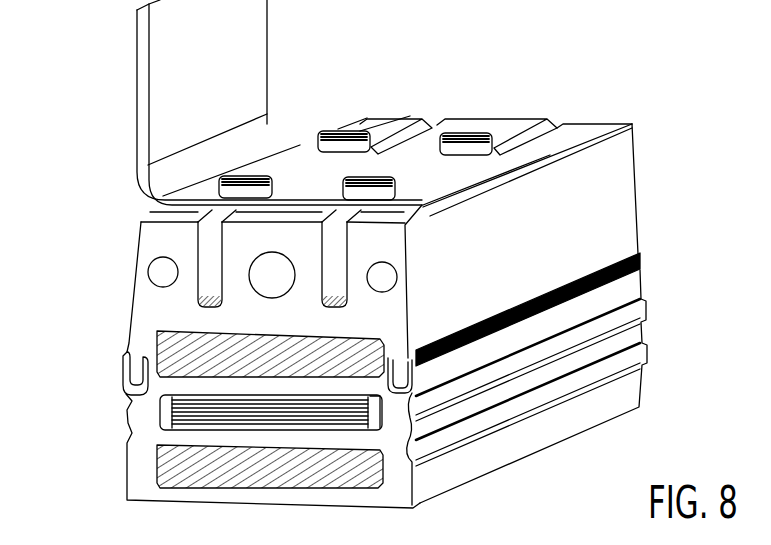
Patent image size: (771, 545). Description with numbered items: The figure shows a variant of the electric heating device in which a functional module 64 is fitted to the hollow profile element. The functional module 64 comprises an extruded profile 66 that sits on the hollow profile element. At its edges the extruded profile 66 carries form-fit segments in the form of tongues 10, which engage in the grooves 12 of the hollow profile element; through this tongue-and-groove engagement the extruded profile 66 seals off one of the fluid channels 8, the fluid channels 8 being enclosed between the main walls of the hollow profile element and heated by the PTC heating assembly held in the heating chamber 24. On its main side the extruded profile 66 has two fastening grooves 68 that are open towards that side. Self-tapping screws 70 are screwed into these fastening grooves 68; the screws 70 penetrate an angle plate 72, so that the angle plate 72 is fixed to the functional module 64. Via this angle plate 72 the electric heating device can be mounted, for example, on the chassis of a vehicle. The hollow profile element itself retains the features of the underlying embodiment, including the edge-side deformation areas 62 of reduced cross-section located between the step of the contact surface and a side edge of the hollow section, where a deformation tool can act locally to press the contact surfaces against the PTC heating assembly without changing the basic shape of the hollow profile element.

The fluid channel 8 is at (149, 341).
The tongue 10 is at (416, 381).
The groove 12 is at (536, 305).
The heating chamber 24 is at (154, 418).
The deformation area 62 is at (379, 396).
The functional module 64 is at (646, 168).
The extruded profile 66 is at (628, 215).
The fastening groove 68 is at (327, 278).
The self-tapping screw 70 is at (309, 137).
The angle plate 72 is at (162, 48).